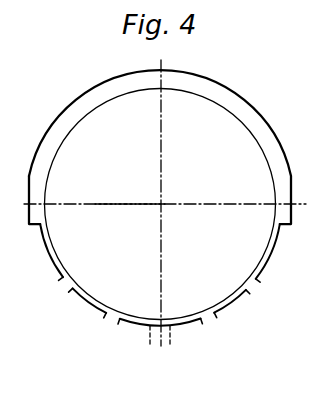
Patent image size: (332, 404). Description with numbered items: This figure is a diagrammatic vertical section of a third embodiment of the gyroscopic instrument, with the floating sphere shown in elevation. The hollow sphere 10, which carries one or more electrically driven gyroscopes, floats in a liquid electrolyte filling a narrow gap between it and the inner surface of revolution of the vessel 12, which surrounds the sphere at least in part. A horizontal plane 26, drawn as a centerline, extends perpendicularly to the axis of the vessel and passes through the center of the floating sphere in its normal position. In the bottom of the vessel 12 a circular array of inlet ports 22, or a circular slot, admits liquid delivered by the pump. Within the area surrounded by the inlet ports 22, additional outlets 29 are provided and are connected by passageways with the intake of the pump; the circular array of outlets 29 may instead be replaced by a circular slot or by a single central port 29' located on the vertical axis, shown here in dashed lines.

The hollow sphere 10 is at (197, 137).
The vessel 12 is at (83, 97).
The inlet ports 22 is at (64, 290).
The horizontal plane 26 is at (101, 203).
The additional outlets 29 is at (168, 351).
The single central port 29' is at (163, 362).